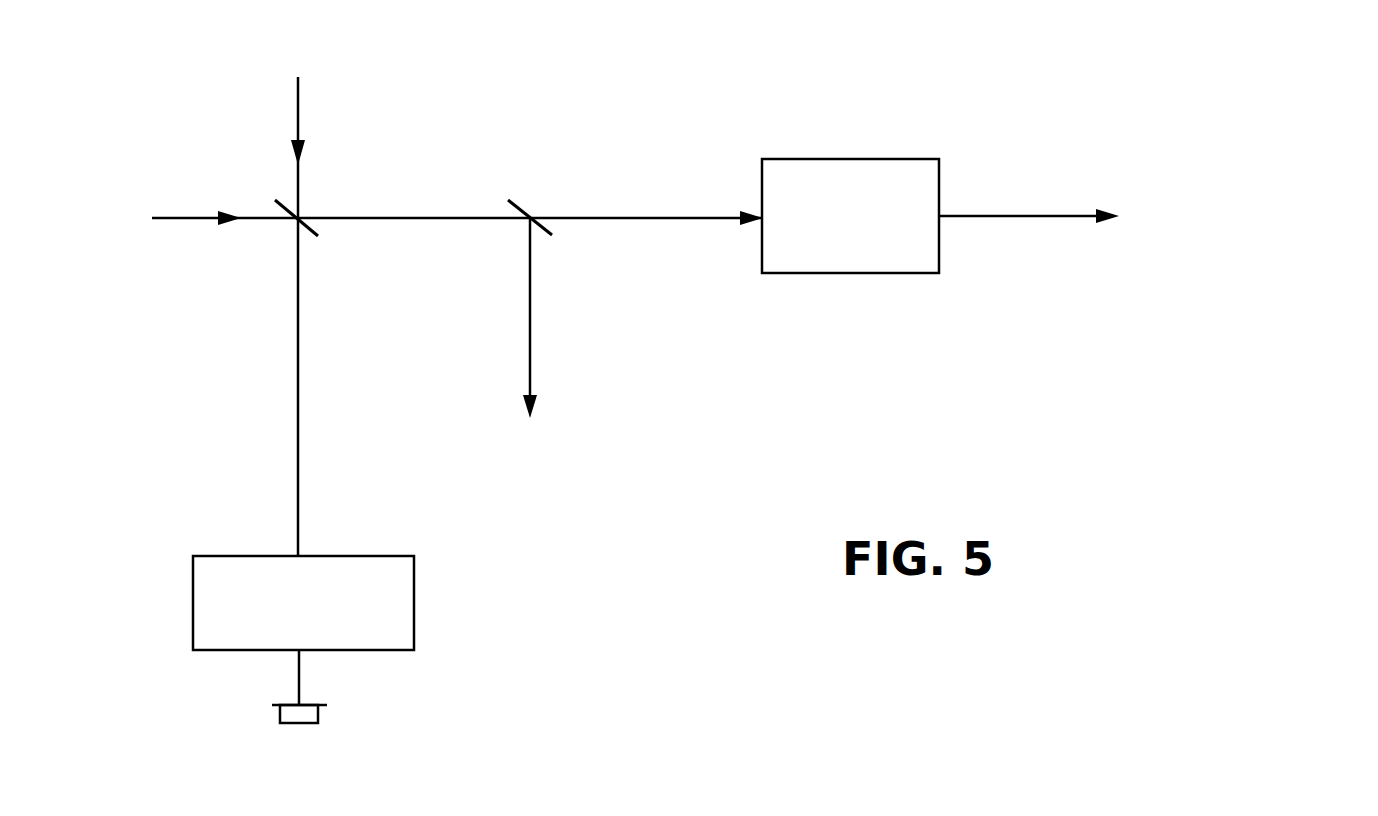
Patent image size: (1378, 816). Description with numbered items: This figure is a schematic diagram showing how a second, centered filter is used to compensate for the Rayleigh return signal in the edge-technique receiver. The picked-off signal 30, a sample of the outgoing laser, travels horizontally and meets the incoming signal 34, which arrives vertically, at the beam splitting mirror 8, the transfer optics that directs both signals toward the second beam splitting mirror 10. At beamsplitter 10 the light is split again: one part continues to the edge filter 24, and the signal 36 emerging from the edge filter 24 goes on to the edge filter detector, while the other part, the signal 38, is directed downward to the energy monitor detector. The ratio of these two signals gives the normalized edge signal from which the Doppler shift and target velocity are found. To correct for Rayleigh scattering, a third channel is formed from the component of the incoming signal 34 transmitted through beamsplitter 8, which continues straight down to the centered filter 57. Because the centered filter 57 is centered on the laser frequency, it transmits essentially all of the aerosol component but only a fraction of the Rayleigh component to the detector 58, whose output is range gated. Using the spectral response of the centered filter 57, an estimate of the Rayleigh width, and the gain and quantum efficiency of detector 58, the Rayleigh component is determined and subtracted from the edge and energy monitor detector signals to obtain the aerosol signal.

The beam splitting mirror 8 is at (311, 218).
The beam splitting mirror 10 is at (518, 205).
The edge filter 24 is at (858, 159).
The picked-off signal 30 is at (174, 219).
The incoming signal 34 is at (299, 100).
The signal emerging from edge filter 36 is at (1010, 216).
The energy monitor channel signal 38 is at (528, 340).
The centered filter 57 is at (193, 603).
The detector 58 is at (305, 723).